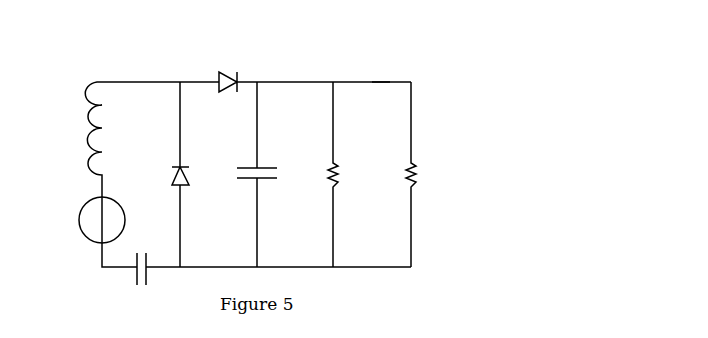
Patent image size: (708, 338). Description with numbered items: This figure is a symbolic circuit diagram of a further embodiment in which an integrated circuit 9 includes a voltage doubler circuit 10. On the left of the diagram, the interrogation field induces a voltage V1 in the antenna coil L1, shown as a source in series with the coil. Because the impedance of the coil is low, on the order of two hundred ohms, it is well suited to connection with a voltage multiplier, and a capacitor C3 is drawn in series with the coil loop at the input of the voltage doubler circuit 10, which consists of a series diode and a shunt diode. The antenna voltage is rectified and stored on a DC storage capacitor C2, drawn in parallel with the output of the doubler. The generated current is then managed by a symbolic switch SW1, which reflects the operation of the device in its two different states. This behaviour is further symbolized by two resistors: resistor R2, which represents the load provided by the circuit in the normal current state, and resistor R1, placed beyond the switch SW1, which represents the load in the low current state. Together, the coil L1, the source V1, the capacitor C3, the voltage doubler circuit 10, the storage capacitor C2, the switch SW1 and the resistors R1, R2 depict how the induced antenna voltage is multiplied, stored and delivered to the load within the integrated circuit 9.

The voltage doubler circuit 10 is at (150, 48).
The integrated circuit 9 is at (533, 123).
The antenna coil L1 is at (152, 139).
The voltage V1 is at (112, 232).
The capacitor C3 is at (274, 263).
The DC storage capacitor C2 is at (277, 174).
The resistor R2 is at (350, 174).
The resistor R1 is at (426, 174).
The symbolic switch SW1 is at (387, 92).